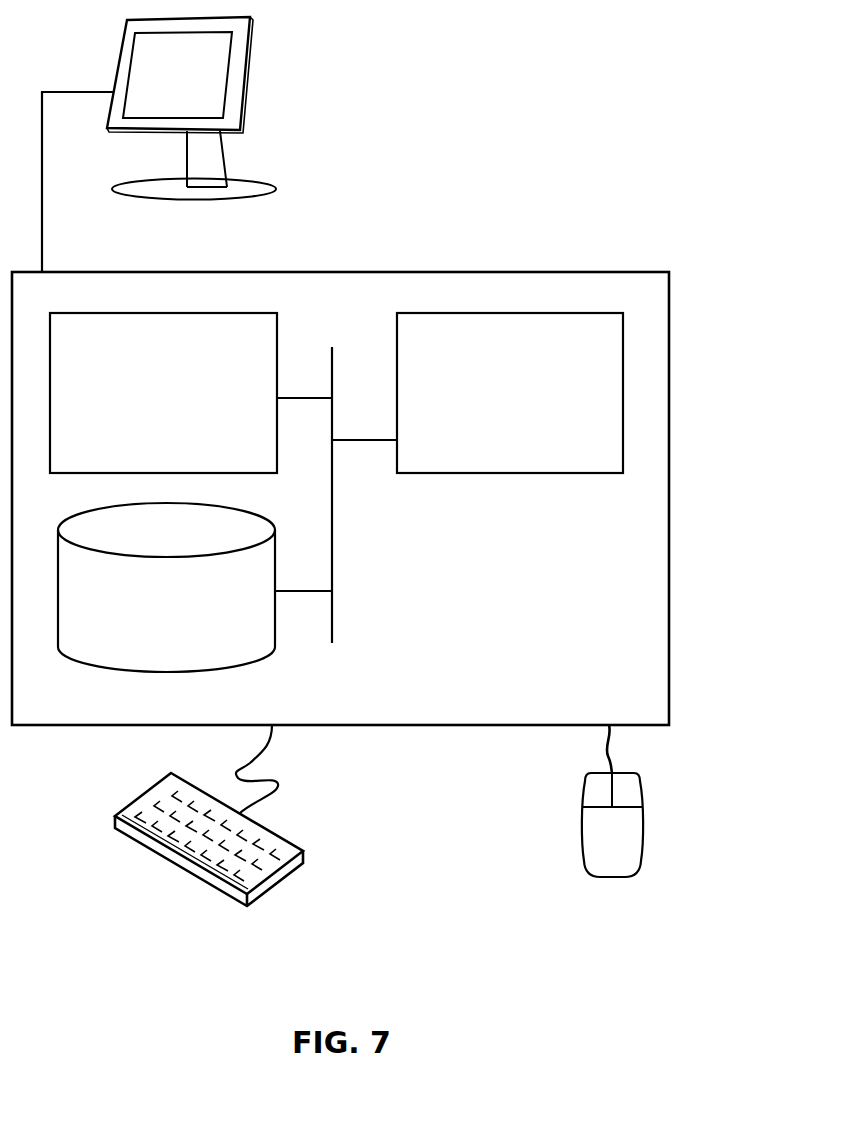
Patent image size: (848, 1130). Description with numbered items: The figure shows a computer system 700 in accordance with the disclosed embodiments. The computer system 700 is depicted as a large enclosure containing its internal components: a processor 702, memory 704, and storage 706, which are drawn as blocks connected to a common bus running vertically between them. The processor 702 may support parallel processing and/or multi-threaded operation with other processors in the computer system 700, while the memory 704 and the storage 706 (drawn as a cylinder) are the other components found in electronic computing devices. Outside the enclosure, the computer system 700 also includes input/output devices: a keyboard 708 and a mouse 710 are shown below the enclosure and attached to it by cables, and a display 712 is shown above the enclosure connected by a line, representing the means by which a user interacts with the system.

The computer system 700 is at (387, 250).
The processor 702 is at (535, 405).
The memory 704 is at (184, 405).
The storage 706 is at (191, 618).
The keyboard 708 is at (133, 833).
The mouse 710 is at (633, 848).
The display 712 is at (159, 144).